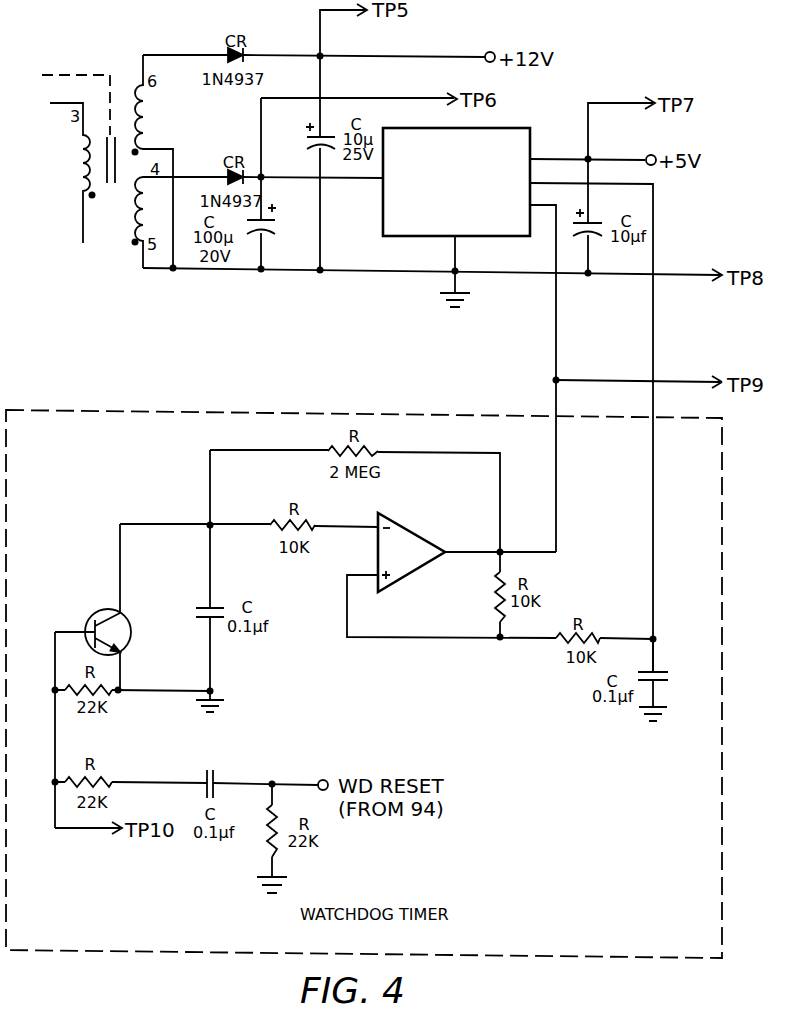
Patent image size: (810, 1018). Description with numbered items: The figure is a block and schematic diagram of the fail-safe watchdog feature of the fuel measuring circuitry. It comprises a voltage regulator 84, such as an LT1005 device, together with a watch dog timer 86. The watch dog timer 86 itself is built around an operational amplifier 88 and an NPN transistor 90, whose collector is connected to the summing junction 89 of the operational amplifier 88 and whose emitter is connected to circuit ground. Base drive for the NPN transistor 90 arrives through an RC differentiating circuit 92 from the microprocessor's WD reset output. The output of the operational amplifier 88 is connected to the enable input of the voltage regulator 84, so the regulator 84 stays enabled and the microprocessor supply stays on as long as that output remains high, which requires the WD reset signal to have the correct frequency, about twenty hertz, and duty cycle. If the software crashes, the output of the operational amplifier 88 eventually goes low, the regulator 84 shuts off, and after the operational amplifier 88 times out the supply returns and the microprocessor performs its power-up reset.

The voltage regulator 84 is at (516, 128).
The watch dog timer 86 is at (375, 709).
The operational amplifier 88 is at (403, 524).
The summing junction 89 is at (208, 522).
The NPN transistor 90 is at (121, 613).
The RC differentiating circuit 92 is at (257, 812).